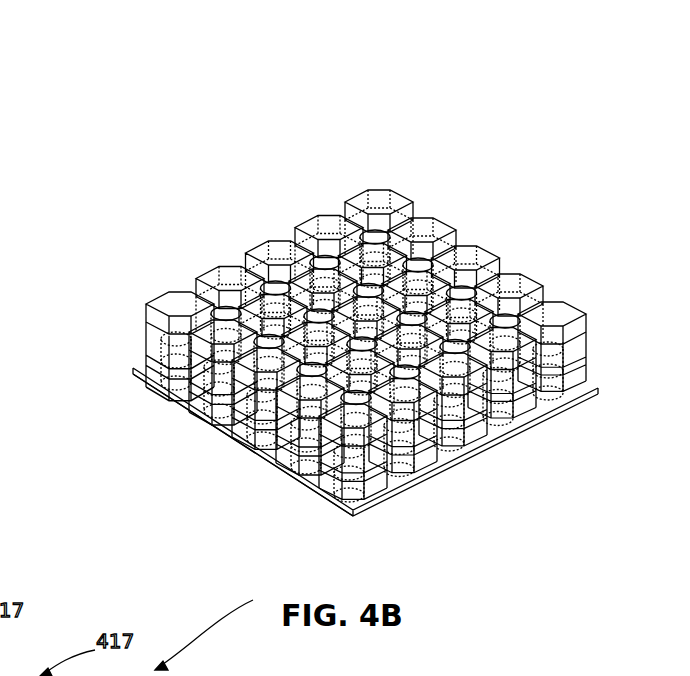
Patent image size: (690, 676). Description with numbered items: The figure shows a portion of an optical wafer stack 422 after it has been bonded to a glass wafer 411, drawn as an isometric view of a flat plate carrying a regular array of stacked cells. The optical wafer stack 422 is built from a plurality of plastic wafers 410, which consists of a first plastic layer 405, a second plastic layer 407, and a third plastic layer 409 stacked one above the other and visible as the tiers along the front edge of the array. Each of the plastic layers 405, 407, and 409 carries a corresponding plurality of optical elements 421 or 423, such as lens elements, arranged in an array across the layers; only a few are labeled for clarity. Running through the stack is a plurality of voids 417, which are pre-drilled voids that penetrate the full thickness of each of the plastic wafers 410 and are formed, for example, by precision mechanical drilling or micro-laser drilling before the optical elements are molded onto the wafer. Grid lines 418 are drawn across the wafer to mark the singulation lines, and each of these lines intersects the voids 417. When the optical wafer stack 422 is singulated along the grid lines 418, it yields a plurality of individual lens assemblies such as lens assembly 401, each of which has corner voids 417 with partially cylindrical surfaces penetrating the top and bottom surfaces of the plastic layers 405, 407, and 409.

The lens assembly 401 is at (41, 563).
The first plastic layer 405 is at (330, 377).
The second plastic layer 407 is at (330, 377).
The third plastic layer 409 is at (304, 298).
The plurality of plastic wafers 410 is at (136, 240).
The glass wafer 411 is at (157, 400).
The voids 417 is at (319, 255).
The grid lines 418 is at (147, 325).
The optical elements 421 is at (620, 268).
The optical wafer stack 422 is at (511, 58).
The optical elements 423 is at (317, 482).